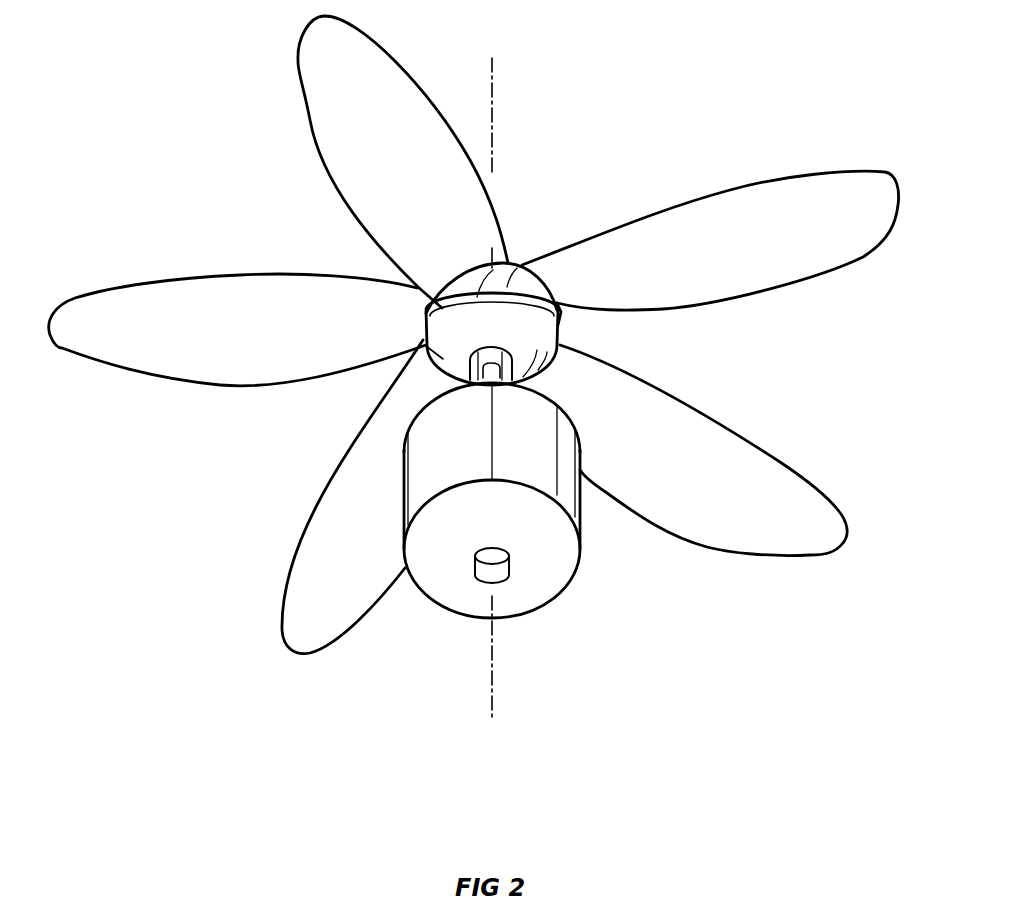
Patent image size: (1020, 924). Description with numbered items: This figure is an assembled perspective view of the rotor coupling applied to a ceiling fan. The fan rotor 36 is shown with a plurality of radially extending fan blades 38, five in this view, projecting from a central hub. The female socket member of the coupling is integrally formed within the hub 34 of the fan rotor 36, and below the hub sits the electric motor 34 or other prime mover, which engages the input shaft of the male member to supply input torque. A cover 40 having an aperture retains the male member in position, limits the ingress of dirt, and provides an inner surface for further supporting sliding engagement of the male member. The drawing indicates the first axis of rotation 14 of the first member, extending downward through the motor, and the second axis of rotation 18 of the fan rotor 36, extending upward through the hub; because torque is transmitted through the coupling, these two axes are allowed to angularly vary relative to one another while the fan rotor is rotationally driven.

The first axis of rotation 14 is at (493, 668).
The second axis of rotation 18 is at (493, 111).
The electric motor 34 is at (559, 320).
The fan rotor 36 is at (283, 222).
The fan blades 38 is at (312, 42).
The cover 40 is at (424, 344).